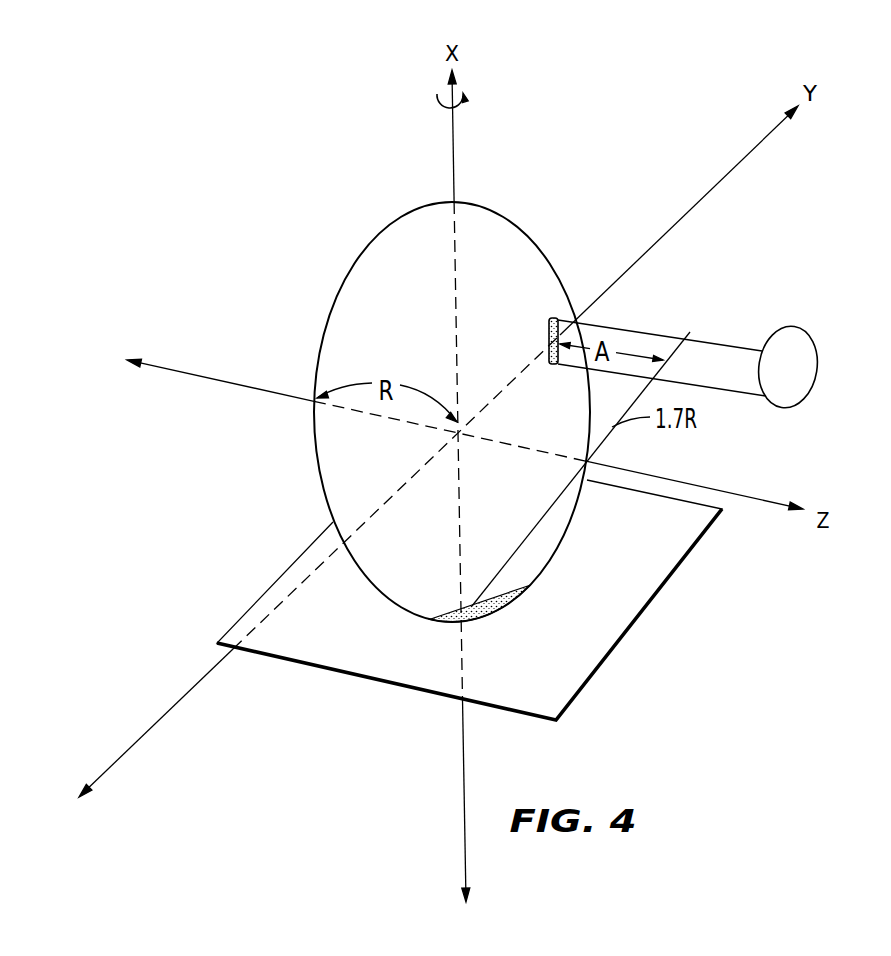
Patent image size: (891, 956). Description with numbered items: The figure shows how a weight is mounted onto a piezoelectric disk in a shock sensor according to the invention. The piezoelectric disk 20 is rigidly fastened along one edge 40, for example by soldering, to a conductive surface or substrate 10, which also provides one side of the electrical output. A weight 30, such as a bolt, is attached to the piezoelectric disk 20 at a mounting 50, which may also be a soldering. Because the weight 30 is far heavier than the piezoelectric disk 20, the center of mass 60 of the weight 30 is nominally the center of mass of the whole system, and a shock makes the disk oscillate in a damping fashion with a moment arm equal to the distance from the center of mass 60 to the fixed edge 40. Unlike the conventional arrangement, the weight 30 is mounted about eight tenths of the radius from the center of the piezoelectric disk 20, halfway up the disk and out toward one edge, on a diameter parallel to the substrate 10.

The conductive surface 10 is at (625, 635).
The piezoelectric disk 20 is at (313, 430).
The weight 30 is at (812, 330).
The rigidly mounted edge 40 is at (502, 610).
The mounting 50 is at (548, 333).
The center of mass 60 is at (690, 332).